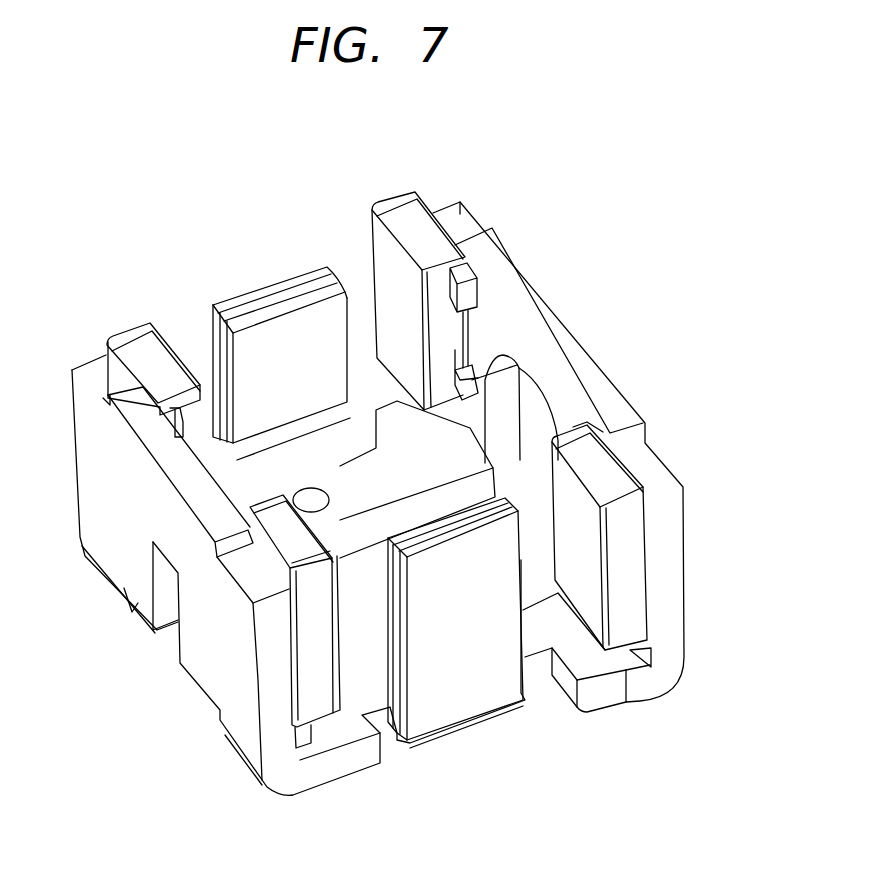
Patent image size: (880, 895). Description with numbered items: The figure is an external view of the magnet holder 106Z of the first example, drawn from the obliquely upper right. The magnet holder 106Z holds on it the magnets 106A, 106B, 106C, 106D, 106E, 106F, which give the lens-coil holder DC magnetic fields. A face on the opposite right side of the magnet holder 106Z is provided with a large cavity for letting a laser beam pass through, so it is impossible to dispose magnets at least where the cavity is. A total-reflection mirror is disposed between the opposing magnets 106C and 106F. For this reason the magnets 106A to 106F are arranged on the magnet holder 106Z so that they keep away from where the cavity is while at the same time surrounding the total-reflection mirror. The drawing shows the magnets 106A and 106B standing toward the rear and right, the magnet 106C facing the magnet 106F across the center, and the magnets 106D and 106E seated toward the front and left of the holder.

The magnet 106A is at (630, 590).
The magnet 106B is at (417, 215).
The magnet 106C is at (267, 337).
The magnet 106D is at (140, 336).
The magnet 106E is at (317, 698).
The magnet 106F is at (397, 622).
The magnet holder 106Z is at (212, 663).